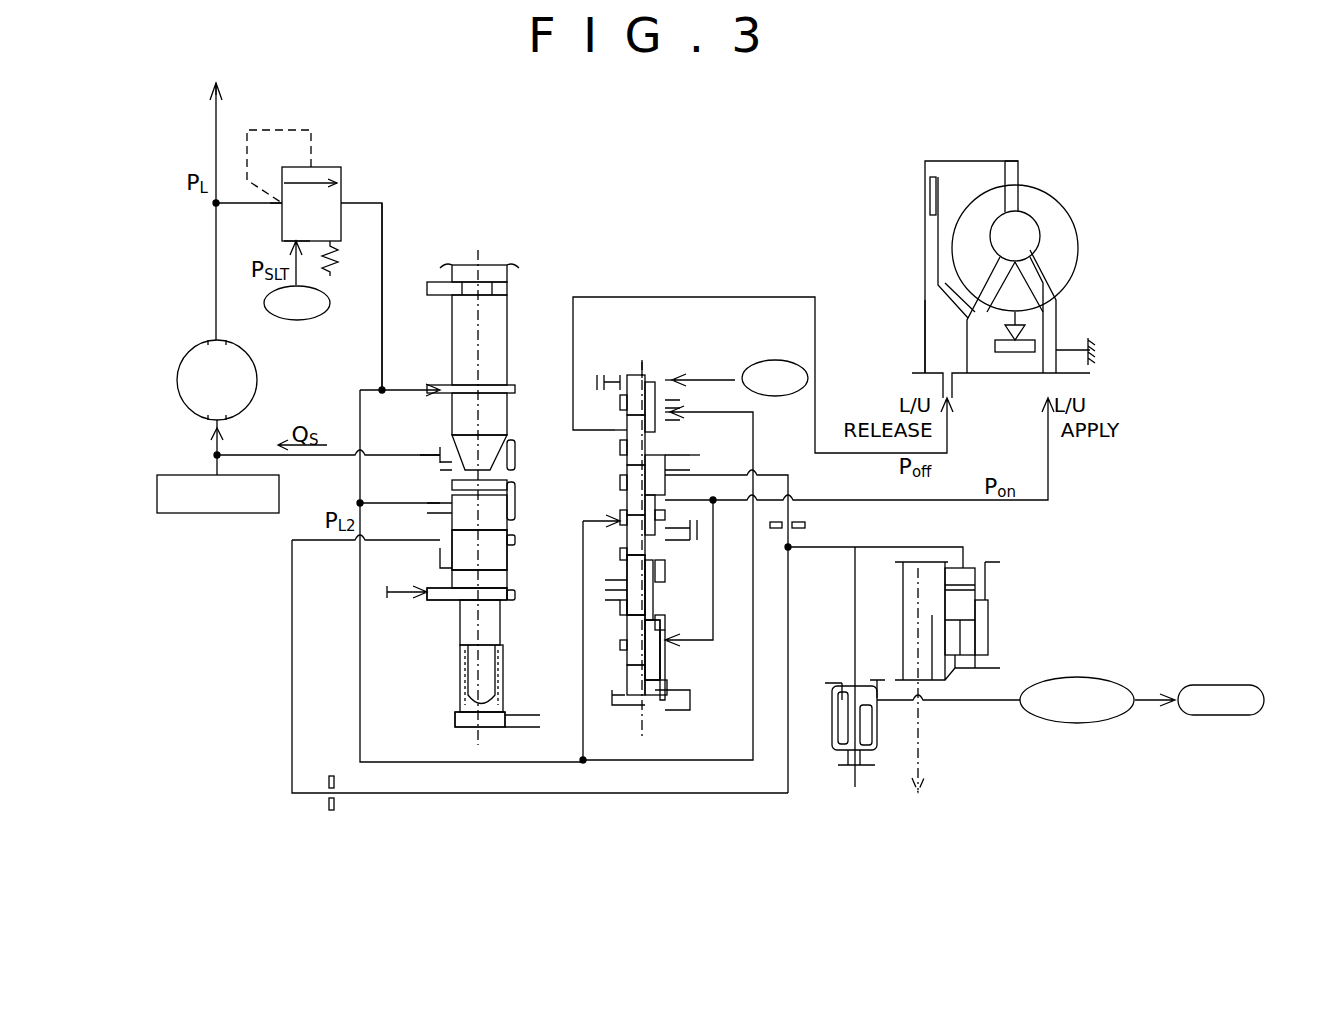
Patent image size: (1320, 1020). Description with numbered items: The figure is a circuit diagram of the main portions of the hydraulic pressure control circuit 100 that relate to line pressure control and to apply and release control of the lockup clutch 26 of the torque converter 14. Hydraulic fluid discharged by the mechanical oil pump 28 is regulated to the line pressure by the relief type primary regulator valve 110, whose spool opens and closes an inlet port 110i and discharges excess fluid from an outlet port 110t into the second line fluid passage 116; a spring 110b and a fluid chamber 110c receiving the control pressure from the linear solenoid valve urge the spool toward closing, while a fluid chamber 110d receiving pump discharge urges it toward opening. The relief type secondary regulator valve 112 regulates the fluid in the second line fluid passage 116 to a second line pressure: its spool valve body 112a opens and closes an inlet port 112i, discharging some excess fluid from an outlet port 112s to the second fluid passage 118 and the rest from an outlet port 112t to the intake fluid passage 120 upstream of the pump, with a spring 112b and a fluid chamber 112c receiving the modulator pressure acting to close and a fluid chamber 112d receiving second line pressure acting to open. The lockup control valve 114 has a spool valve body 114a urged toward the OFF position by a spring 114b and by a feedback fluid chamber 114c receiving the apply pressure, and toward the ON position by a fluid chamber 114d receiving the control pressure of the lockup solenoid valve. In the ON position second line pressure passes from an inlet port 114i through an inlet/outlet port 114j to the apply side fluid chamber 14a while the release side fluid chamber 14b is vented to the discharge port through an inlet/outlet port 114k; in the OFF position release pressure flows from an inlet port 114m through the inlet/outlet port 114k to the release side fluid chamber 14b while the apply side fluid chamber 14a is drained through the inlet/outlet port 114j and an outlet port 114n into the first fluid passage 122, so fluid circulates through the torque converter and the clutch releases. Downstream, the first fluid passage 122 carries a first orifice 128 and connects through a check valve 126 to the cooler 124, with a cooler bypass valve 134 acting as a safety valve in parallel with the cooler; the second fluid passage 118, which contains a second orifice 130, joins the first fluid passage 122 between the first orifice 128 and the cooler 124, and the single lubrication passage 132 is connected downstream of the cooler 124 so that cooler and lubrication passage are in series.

The hydraulic pressure control circuit 100 is at (697, 130).
The torque converter 14 is at (1042, 168).
The apply side fluid chamber 14a is at (992, 168).
The release side fluid chamber 14b is at (925, 340).
The lockup clutch 26 is at (935, 185).
The mechanical oil pump 28 is at (242, 362).
The primary regulator valve 110 is at (341, 170).
The fluid chamber 110d is at (312, 165).
The outlet port 110t is at (343, 200).
The inlet port 110i is at (280, 205).
The fluid chamber 110c is at (295, 243).
The spring 110b is at (330, 278).
The second line fluid passage 116 is at (383, 238).
The secondary regulator valve 112 is at (481, 222).
The fluid chamber 112d is at (440, 388).
The outlet port 112t is at (440, 450).
The inlet port 112i is at (440, 505).
The outlet port 112s is at (440, 550).
The spool valve body 112a is at (507, 557).
The fluid chamber 112c is at (440, 600).
The spring 112b is at (455, 720).
The lockup control valve 114 is at (641, 287).
The fluid chamber 114d is at (665, 382).
The inlet port 114m is at (667, 408).
The inlet/outlet port 114k is at (622, 440).
The inlet port 114i is at (620, 518).
The outlet port 114n is at (715, 482).
The inlet/outlet port 114j is at (690, 512).
The spool valve body 114a is at (632, 548).
The spring 114b is at (640, 600).
The feedback fluid chamber 114c is at (670, 642).
The second fluid passage 118 is at (292, 640).
The intake fluid passage 120 is at (214, 453).
The first fluid passage 122 is at (763, 805).
The cooler 124 is at (1090, 680).
The check valve 126 is at (843, 789).
The first orifice 128 is at (805, 528).
The second orifice 130 is at (330, 780).
The lubrication passage 132 is at (1240, 716).
The cooler bypass valve 134 is at (997, 612).